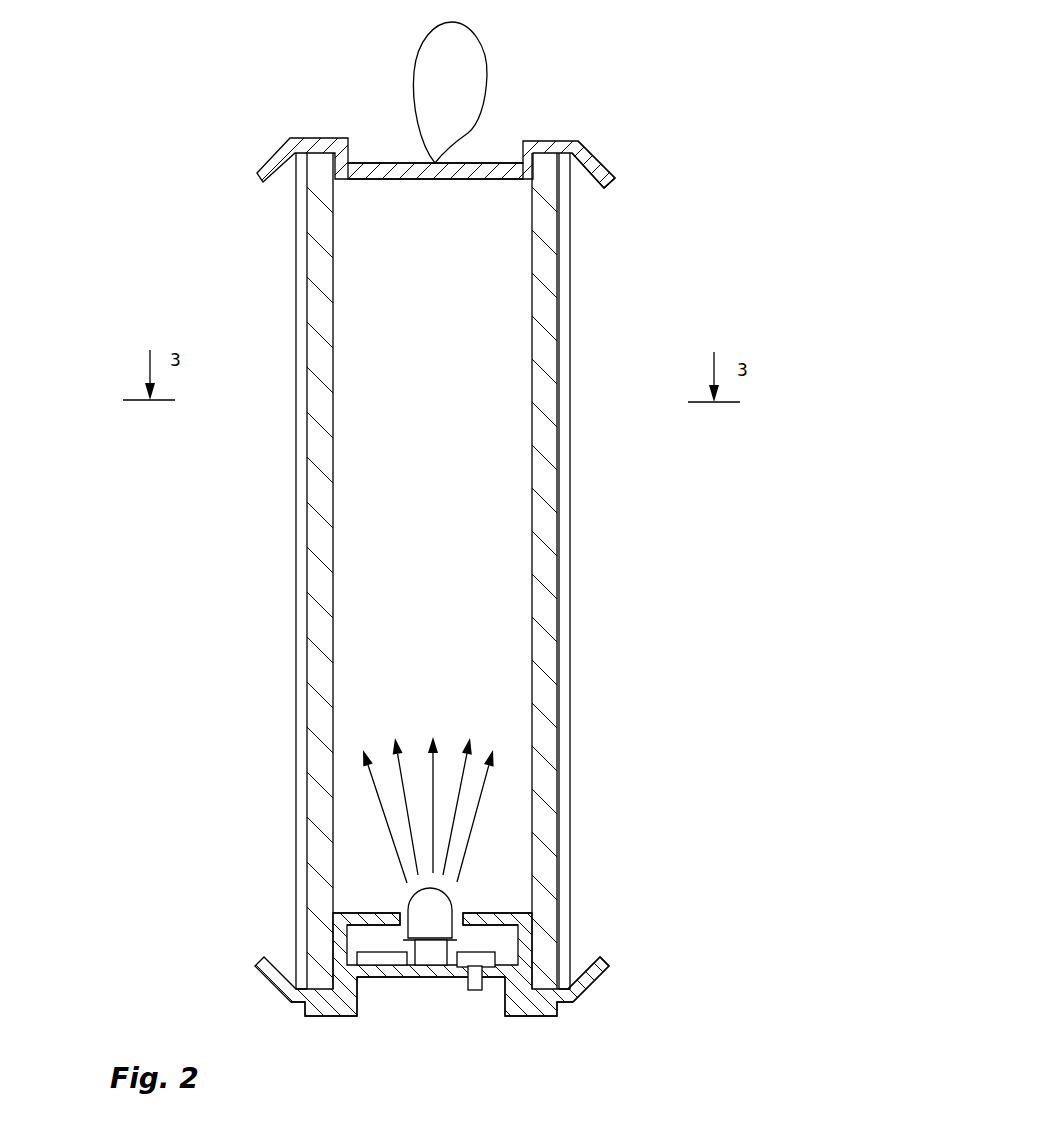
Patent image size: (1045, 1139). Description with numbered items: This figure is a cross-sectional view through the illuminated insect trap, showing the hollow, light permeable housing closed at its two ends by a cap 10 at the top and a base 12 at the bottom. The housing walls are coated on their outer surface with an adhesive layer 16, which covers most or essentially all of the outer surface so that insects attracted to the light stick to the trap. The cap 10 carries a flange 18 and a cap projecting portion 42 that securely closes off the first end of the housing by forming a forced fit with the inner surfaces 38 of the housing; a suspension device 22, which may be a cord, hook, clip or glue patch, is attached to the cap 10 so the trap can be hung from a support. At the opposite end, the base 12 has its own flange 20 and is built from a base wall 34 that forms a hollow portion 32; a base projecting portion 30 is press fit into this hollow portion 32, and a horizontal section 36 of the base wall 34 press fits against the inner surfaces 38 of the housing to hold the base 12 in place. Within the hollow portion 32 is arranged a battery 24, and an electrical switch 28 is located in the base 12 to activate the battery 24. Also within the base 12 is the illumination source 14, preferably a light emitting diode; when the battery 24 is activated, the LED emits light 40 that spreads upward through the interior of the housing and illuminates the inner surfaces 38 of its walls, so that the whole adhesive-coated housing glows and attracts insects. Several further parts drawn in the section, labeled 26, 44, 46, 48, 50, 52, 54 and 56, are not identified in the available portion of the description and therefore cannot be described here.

The cap 10 is at (648, 44).
The base 12 is at (550, 313).
The illumination source 14 is at (560, 367).
The adhesive layer 16 is at (571, 420).
The flange 18 is at (575, 1003).
The flange 20 is at (347, 933).
The suspension device 22 is at (548, 947).
The battery 24 is at (350, 910).
The right ledge 26 is at (467, 905).
The electrical switch 28 is at (425, 918).
The base projecting portion 30 is at (322, 1017).
The hollow portion 32 is at (378, 1017).
The base wall 34 is at (400, 978).
The horizontal section 36 is at (474, 990).
The inner surfaces 38 is at (468, 740).
The light 40 is at (375, 629).
The cap projecting portion 42 is at (330, 483).
The top end cap 44 is at (565, 140).
The top plate 46 is at (490, 157).
The wick / fluid 48 is at (487, 45).
The top flange 50 is at (598, 163).
The bottom flange 52 is at (595, 985).
The top flange end 54 is at (603, 185).
The bottom flange end 56 is at (609, 967).